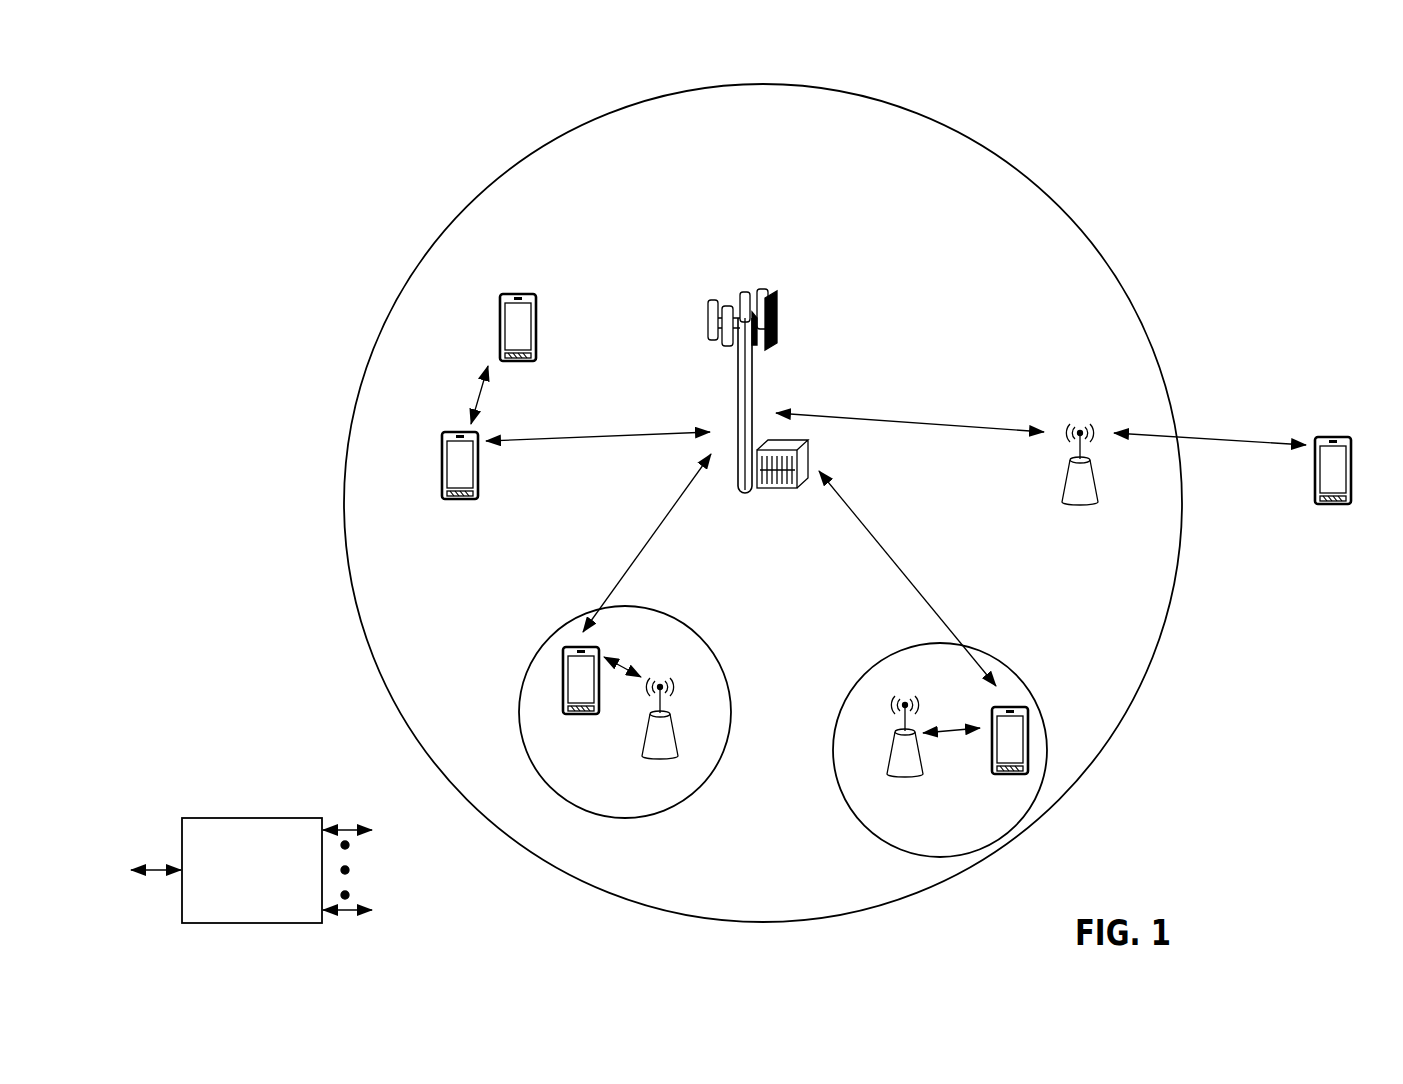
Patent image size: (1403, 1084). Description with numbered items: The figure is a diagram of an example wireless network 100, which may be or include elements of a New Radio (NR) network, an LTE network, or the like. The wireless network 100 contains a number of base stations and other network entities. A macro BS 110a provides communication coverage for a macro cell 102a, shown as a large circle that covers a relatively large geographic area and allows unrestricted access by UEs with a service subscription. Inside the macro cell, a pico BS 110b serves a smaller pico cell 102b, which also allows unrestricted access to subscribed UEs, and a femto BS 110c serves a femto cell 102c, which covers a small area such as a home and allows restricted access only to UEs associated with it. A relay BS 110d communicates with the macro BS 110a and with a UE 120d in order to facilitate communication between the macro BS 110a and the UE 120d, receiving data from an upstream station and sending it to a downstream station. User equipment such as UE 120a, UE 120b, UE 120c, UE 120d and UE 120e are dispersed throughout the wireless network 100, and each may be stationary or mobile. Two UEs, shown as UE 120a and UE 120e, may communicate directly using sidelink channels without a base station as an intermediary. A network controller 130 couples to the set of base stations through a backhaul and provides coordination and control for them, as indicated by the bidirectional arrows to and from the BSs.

The wireless network 100 is at (236, 78).
The macro cell 102a is at (1043, 190).
The pico cell 102b is at (713, 653).
The femto cell 102c is at (879, 662).
The macro BS 110a is at (757, 290).
The pico BS 110b is at (681, 738).
The femto BS 110c is at (888, 765).
The relay BS 110d is at (1081, 424).
The UE 120a is at (442, 464).
The UE 120b is at (565, 714).
The UE 120c is at (990, 775).
The UE 120d is at (1342, 437).
The UE 120e is at (499, 311).
The network controller 130 is at (248, 818).